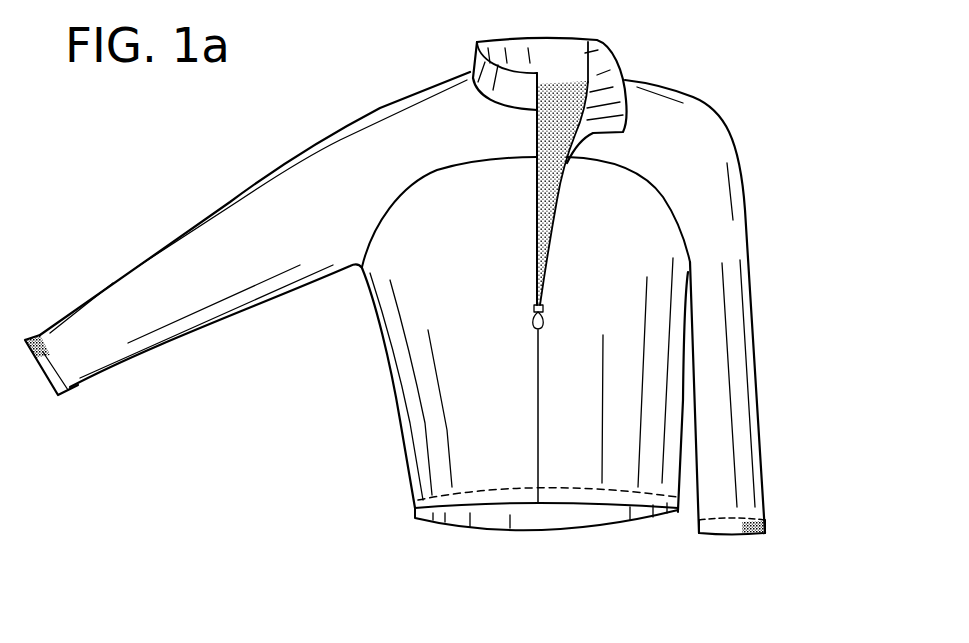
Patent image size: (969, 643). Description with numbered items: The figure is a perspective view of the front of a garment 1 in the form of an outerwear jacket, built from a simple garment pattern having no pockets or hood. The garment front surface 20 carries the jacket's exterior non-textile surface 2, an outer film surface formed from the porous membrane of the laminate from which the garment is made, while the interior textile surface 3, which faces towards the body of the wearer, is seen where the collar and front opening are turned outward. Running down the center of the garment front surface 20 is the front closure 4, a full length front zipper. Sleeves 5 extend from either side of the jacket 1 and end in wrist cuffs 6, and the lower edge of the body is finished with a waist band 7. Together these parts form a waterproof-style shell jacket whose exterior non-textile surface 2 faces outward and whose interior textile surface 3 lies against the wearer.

The garment 1 is at (227, 195).
The exterior non-textile surface 2 is at (638, 235).
The interior textile surface 3 is at (560, 110).
The front closure 4 is at (540, 453).
The sleeves 5 is at (137, 290).
The wrist cuffs 6 is at (62, 391).
The waist band 7 is at (415, 508).
The garment front surface 20 is at (460, 260).